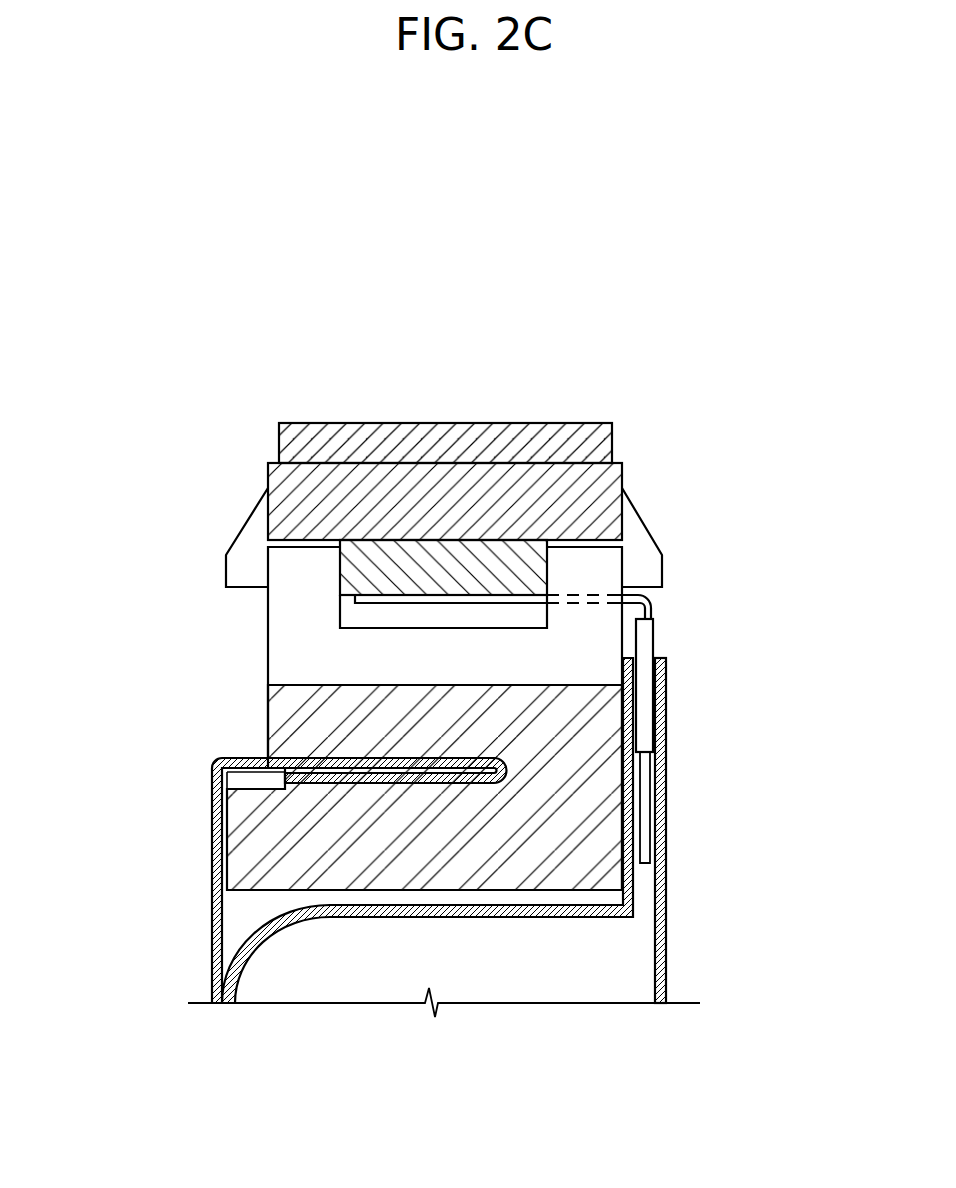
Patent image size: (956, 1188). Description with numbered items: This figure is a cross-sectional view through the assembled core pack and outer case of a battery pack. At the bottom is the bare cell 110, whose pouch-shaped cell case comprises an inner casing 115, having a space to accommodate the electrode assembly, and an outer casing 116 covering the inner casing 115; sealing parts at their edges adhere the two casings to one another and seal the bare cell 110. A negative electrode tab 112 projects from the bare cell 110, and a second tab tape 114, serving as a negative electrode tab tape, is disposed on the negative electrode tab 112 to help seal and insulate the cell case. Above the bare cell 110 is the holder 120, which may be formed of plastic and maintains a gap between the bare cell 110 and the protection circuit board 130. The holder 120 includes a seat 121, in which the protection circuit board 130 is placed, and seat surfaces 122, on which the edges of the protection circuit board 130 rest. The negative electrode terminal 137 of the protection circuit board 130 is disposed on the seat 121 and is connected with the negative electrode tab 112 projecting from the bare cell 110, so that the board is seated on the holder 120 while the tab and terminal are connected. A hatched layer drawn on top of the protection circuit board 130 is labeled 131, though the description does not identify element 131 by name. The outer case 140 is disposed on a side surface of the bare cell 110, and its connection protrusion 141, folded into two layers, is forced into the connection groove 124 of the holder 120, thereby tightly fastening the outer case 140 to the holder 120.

The bare cell 110 is at (424, 830).
The negative electrode tab 112 is at (652, 605).
The second tab tape 114 is at (645, 640).
The inner casing 115 is at (247, 953).
The outer casing 116 is at (666, 733).
The holder 120 is at (373, 718).
The seat 121 is at (463, 615).
The seat surface 122 is at (585, 546).
The connection groove 124 is at (260, 782).
The protection circuit board 130 is at (598, 482).
The sensing element 131 is at (453, 437).
The negative electrode terminal 137 is at (357, 568).
The outer case 140 is at (212, 802).
The connection protrusion 141 is at (237, 758).